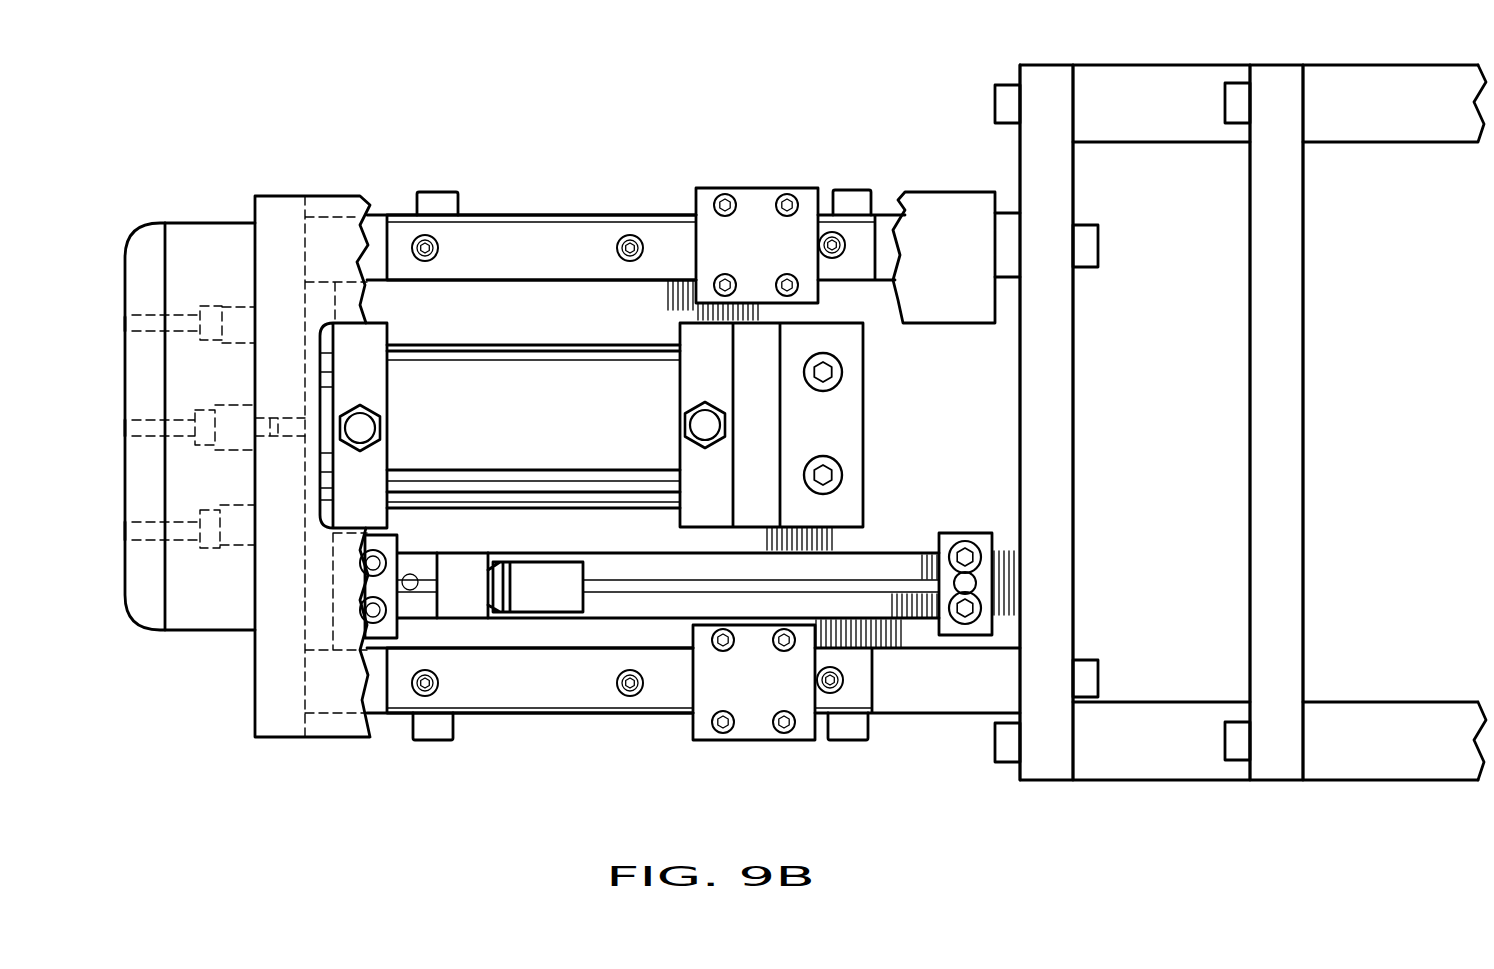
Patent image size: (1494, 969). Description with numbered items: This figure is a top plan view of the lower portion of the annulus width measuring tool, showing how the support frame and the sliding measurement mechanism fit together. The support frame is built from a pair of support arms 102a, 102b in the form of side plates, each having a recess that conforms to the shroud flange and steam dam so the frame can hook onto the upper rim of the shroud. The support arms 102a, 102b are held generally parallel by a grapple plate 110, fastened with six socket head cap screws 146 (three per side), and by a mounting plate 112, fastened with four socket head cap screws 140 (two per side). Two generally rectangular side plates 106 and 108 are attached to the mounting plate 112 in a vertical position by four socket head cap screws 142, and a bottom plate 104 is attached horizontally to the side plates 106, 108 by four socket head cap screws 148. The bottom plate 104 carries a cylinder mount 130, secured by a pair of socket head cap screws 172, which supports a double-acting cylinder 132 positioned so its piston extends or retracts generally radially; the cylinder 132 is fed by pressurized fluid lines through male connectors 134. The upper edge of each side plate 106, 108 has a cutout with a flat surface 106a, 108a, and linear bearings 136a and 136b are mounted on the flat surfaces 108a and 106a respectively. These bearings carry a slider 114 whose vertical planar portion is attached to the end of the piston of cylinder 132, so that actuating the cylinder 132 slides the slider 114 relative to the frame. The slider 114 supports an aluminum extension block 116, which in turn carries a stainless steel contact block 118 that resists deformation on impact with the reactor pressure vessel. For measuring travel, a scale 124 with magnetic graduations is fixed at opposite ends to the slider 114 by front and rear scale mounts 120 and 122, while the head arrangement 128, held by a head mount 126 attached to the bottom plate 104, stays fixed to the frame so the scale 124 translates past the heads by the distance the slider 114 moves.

The support arm 102a is at (1145, 782).
The support arm 102b is at (1148, 64).
The bottom plate 104 is at (1003, 449).
The side plate 106 is at (913, 697).
The flat surface 106a is at (570, 695).
The side plate 108 is at (888, 222).
The flat surface 108a is at (665, 235).
The grapple plate 110 is at (1290, 350).
The mounting plate 112 is at (1060, 400).
The slider 114 is at (330, 202).
The extension block 116 is at (223, 230).
The contact block 118 is at (135, 233).
The front scale mount 120 is at (977, 530).
The rear scale mount 122 is at (390, 537).
The scale 124 is at (842, 583).
The head mount 126 is at (463, 610).
The head arrangement 128 is at (552, 572).
The cylinder mount 130 is at (865, 408).
The double-acting cylinder 132 is at (553, 455).
The male connector 134 is at (363, 427).
The linear bearing 136a is at (745, 187).
The linear bearing 136b is at (735, 742).
The socket head cap screw 140 is at (1005, 85).
The socket head cap screw 142 is at (1098, 243).
The socket head cap screw 146 is at (1225, 107).
The socket head cap screw 148 is at (437, 195).
The socket head cap screw 172 is at (840, 370).